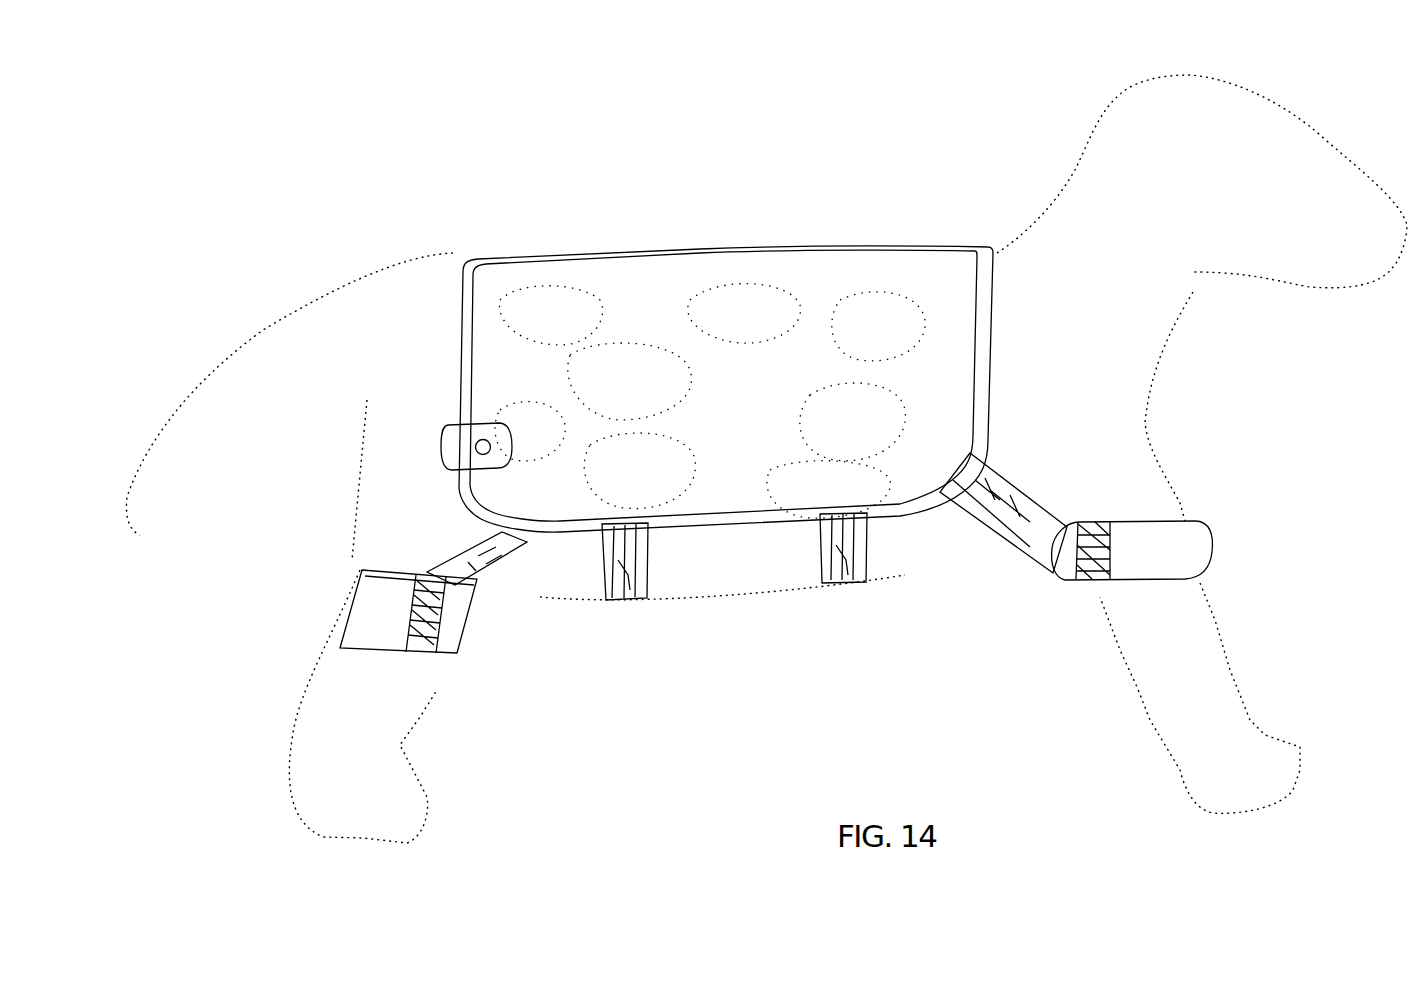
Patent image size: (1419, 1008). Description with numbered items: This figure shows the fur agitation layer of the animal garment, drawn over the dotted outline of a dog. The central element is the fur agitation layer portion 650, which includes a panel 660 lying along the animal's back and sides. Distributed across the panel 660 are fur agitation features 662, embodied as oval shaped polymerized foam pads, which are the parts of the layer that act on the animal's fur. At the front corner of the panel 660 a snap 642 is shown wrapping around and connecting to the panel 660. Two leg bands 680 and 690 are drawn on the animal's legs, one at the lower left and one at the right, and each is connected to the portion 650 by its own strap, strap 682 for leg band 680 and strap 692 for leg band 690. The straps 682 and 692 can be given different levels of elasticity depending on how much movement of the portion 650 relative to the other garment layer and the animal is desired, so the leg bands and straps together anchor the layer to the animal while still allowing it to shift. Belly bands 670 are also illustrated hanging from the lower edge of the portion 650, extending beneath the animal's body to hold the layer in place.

The fur agitation layer portion 650 is at (571, 261).
The panel 660 is at (650, 283).
The fur agitation features 662 is at (916, 287).
The snap 642 is at (471, 457).
The strap 682 is at (503, 568).
The leg band 680 is at (448, 618).
The belly bands 670 is at (833, 590).
The strap 692 is at (1018, 553).
The leg band 690 is at (1122, 573).